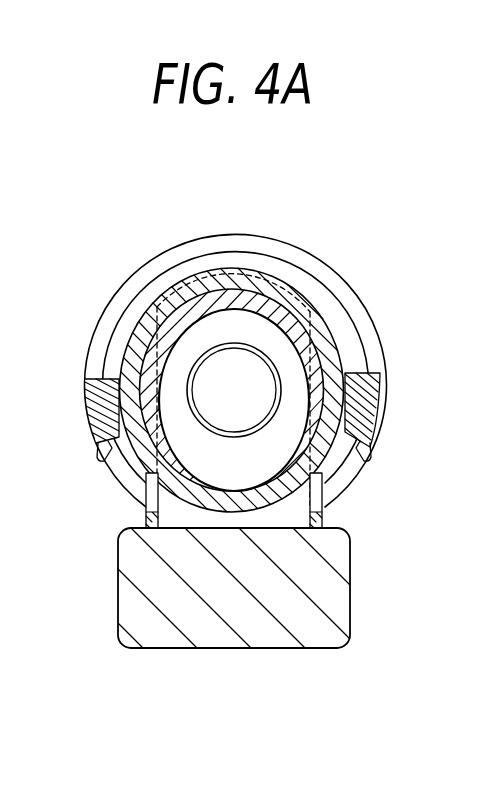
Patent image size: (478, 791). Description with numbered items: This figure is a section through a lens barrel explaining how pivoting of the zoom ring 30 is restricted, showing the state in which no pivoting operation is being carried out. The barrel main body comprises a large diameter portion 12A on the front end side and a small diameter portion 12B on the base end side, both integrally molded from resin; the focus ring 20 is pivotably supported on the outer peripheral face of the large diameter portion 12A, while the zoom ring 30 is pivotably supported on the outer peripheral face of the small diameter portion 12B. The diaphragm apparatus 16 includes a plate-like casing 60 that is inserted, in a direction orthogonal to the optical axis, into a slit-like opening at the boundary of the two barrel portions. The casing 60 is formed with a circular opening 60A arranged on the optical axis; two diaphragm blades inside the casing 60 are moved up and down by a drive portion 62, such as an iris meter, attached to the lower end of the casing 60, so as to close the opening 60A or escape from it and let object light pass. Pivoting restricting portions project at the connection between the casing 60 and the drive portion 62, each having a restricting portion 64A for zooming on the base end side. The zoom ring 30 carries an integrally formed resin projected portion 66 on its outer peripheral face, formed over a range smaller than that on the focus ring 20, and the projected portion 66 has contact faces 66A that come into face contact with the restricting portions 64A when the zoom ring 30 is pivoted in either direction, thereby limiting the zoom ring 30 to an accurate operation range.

The diaphragm apparatus 16 is at (234, 467).
The focus ring 20 is at (272, 233).
The large diameter portion 12A is at (212, 250).
The small diameter portion 12B is at (296, 282).
The zoom ring 30 is at (193, 283).
The casing 60 is at (283, 357).
The opening 60A is at (234, 343).
The projected portion 66 is at (100, 378).
The contact face 66A is at (108, 458).
The restricting portion for zooming 64A is at (144, 524).
The drive portion 62 is at (182, 650).